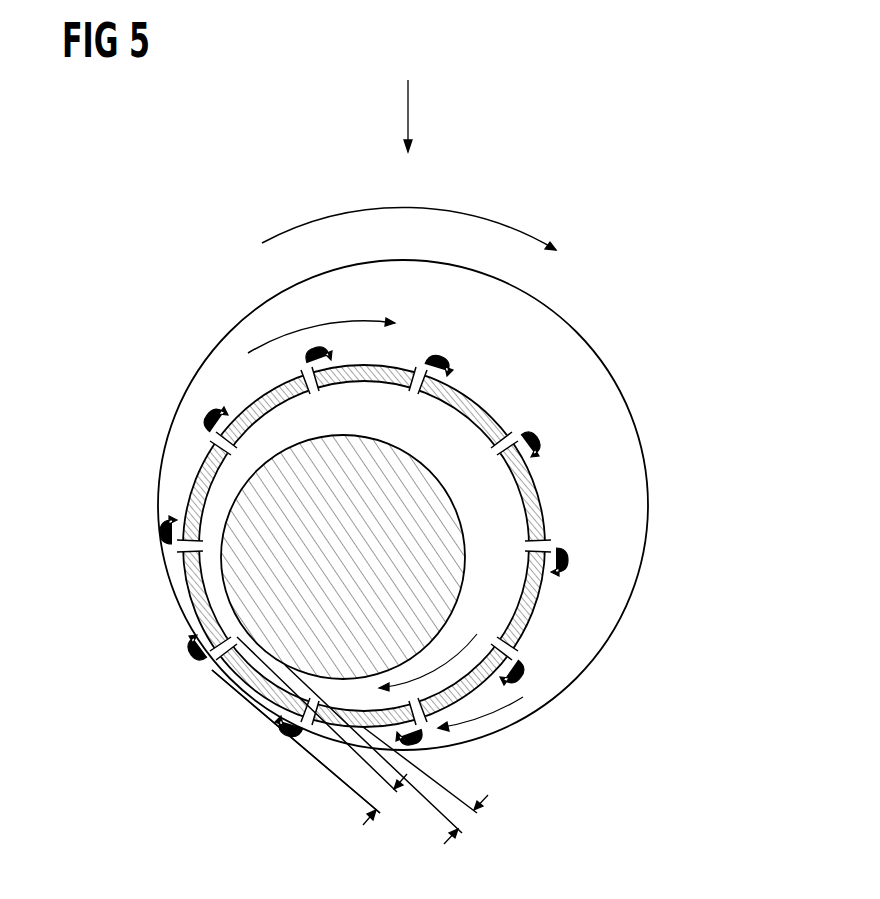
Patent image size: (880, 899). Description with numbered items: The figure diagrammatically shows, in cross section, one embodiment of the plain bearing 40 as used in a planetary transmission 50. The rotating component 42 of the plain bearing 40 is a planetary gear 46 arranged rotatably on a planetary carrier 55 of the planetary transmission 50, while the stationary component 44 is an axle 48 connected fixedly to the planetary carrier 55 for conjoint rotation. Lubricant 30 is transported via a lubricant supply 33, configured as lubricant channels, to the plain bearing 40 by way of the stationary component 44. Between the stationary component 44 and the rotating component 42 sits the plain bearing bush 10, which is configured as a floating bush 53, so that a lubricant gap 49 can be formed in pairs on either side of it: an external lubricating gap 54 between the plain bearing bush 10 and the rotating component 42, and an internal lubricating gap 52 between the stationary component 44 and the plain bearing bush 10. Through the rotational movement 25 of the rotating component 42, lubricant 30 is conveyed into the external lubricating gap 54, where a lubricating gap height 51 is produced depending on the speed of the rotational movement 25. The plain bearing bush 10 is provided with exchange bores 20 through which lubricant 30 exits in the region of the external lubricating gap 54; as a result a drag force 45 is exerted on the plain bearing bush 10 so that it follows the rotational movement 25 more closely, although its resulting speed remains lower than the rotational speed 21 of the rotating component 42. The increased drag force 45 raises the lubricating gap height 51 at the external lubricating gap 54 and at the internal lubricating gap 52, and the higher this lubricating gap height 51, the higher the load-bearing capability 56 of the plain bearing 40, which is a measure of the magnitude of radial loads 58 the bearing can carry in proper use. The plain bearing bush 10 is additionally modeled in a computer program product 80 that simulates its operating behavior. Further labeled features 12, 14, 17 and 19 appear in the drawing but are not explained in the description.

The plain bearing bush 10 is at (399, 589).
The ring housing wall 12 is at (399, 589).
The ring housing wall 14 is at (399, 589).
The ring inner surface 17 is at (399, 589).
The ring inner surface 19 is at (399, 589).
The exchange bores 20 is at (399, 589).
The rotational speed 21 is at (361, 245).
The rotational movement 25 is at (323, 222).
The drag force 45 is at (263, 343).
The lubricant 30 is at (450, 562).
The lubricant supply 33 is at (517, 550).
The plain bearing 40 is at (462, 448).
The planetary transmission 50 is at (462, 448).
The planetary carrier 55 is at (462, 448).
The computer program product 80 is at (462, 448).
The rotating component 42 is at (462, 448).
The planetary gear 46 is at (767, 179).
The stationary component 44 is at (467, 557).
The axle 48 is at (440, 578).
The lubricant gap 49 is at (399, 589).
The internal lubricating gap 52 is at (203, 487).
The floating bush 53 is at (399, 589).
The external lubricating gap 54 is at (213, 670).
The lubricating gap height 51 is at (394, 768).
The load-bearing capability 56 is at (393, 805).
The radial loads 58 is at (410, 107).